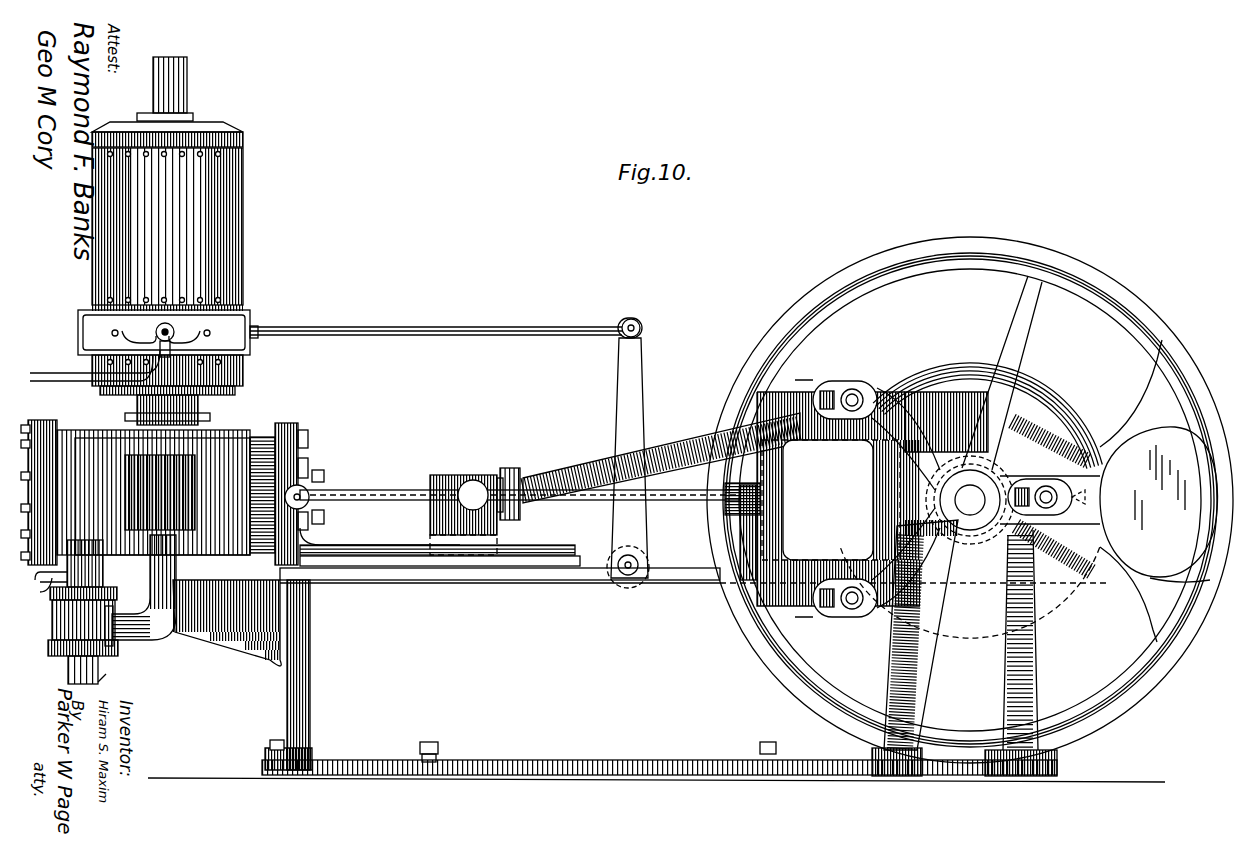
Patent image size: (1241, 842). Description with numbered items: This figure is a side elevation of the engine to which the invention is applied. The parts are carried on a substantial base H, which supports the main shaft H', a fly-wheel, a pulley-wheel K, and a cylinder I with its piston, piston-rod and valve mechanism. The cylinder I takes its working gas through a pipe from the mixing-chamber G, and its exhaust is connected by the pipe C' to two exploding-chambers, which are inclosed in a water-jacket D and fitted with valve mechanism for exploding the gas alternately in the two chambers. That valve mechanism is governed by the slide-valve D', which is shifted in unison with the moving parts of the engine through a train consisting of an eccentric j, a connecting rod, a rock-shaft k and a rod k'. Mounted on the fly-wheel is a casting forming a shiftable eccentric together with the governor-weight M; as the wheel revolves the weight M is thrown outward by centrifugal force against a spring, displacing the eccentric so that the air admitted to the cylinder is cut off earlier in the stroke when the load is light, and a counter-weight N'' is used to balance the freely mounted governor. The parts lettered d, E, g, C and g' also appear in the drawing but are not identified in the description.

The water-jacket D is at (167, 226).
The slide-valve D' is at (173, 324).
The valve d is at (165, 325).
The valve ports E is at (161, 330).
The rod k' is at (446, 320).
The rock-shaft k is at (640, 463).
The eccentric j is at (661, 468).
The pipe C' is at (161, 520).
The cylinder I is at (380, 492).
The mixing-chamber G is at (69, 563).
The small pipe g is at (39, 592).
The lower cylinder C is at (83, 635).
The outlet stub g' is at (108, 677).
The pulley-wheel K is at (1082, 408).
The governor-weight M is at (864, 499).
The base H is at (656, 637).
The main shaft H' is at (970, 500).
The counter-weight N'' is at (1159, 504).